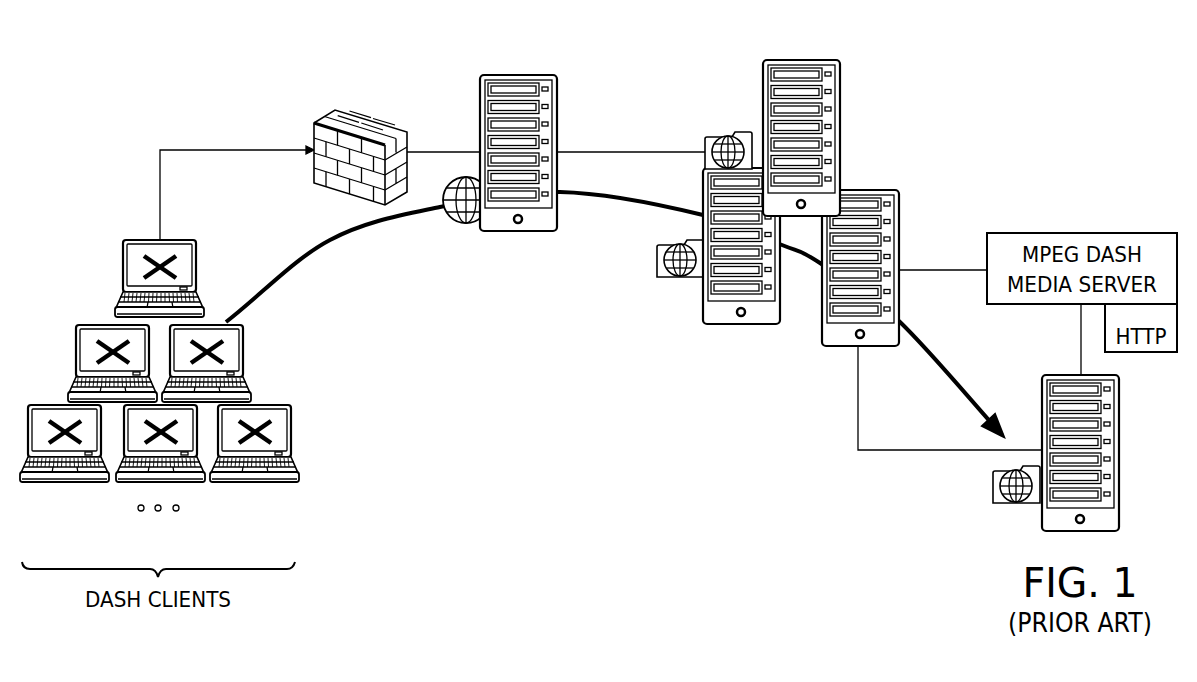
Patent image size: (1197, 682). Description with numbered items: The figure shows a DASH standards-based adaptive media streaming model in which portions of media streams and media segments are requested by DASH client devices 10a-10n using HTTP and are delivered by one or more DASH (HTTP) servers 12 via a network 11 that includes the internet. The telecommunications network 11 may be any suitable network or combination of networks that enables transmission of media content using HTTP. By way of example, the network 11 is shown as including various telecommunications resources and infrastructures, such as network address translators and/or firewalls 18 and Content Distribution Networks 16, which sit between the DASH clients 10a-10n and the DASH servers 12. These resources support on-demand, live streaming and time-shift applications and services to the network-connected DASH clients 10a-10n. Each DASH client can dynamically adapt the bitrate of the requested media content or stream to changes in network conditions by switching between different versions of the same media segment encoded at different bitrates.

The DASH client device 10a is at (62, 484).
The DASH client device 10n is at (249, 484).
The network 11 is at (459, 223).
The DASH (HTTP) server 12 is at (520, 75).
The Content Distribution Network 16 is at (894, 150).
The firewall 18 is at (376, 121).